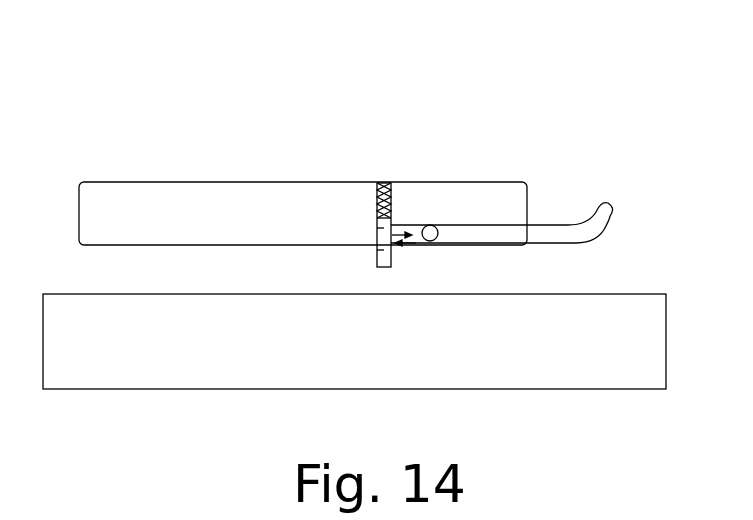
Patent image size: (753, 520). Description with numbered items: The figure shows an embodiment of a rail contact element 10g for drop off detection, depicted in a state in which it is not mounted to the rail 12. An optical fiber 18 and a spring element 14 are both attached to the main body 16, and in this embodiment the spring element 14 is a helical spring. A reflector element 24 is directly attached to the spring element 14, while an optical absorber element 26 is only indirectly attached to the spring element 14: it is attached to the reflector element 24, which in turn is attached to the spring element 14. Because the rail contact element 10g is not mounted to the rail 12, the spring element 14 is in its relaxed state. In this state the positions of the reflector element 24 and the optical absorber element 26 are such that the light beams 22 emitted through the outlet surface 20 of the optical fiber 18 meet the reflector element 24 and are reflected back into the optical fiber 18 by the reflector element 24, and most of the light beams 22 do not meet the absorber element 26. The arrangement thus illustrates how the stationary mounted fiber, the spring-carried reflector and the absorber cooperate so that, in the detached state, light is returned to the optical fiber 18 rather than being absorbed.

The rail contact element 10g is at (558, 117).
The rail 12 is at (150, 356).
The spring element 14 is at (379, 183).
The main body 16 is at (152, 225).
The optical fiber 18 is at (605, 214).
The outlet surface 20 is at (437, 226).
The light beams 22 is at (410, 243).
The reflector element 24 is at (377, 228).
The optical absorber element 26 is at (380, 250).